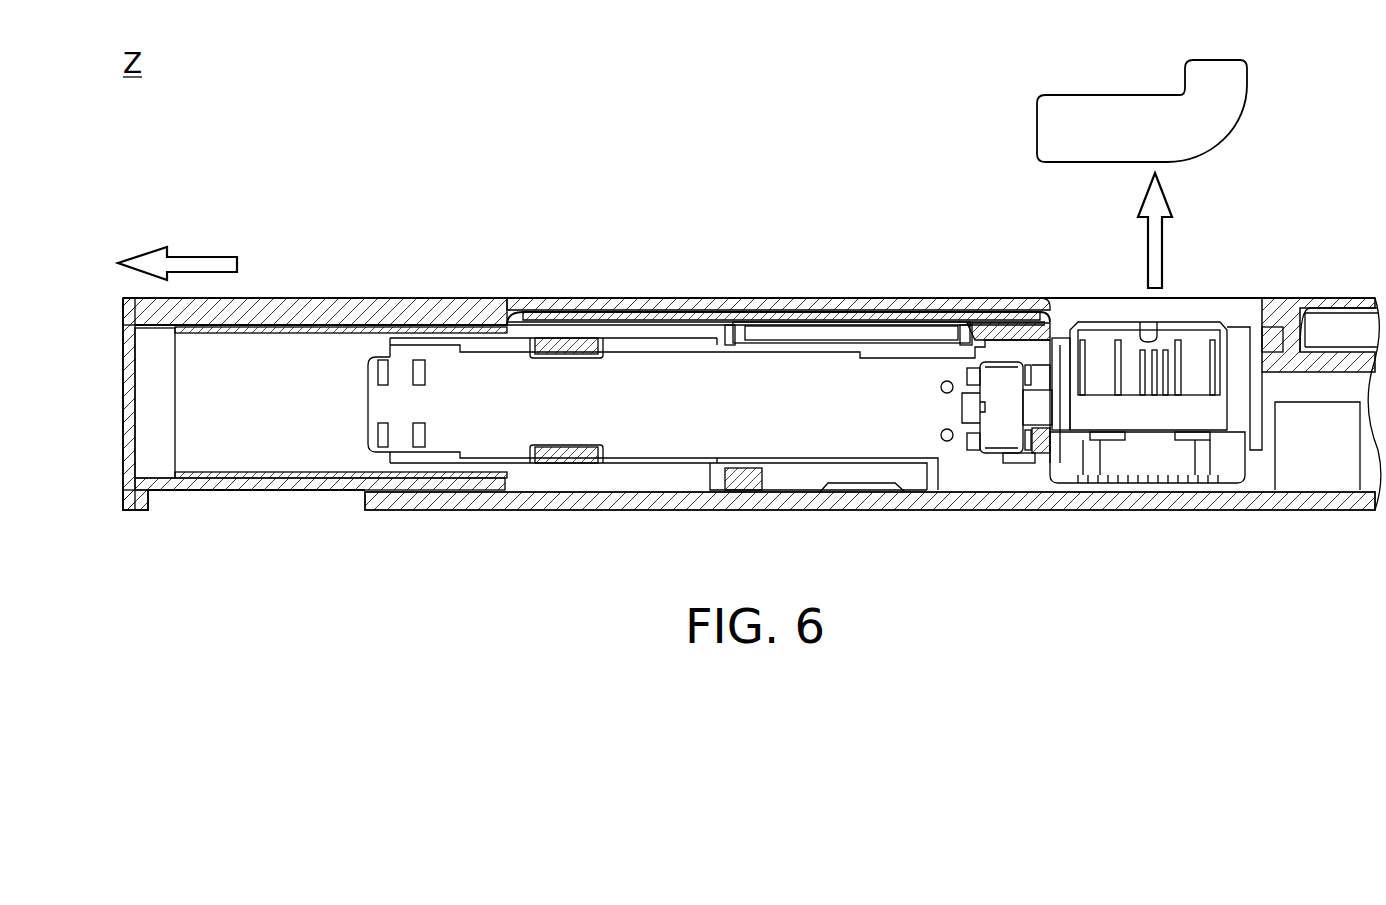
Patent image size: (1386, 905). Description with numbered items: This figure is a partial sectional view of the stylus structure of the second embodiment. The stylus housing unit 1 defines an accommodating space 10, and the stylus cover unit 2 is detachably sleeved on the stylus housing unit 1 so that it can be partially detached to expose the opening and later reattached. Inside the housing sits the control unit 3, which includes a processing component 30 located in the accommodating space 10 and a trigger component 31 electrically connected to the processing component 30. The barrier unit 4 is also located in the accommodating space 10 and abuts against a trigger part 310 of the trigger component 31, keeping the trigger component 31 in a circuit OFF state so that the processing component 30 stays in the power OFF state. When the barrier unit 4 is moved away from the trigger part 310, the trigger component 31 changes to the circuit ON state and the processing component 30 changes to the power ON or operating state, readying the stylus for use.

The stylus housing unit 1 is at (873, 431).
The accommodating space 10 is at (880, 478).
The stylus cover unit 2 is at (343, 300).
The control unit 3 is at (730, 347).
The processing component 30 is at (904, 362).
The trigger component 31 is at (1027, 355).
The trigger part 310 is at (1037, 398).
The barrier unit 4 is at (1040, 133).